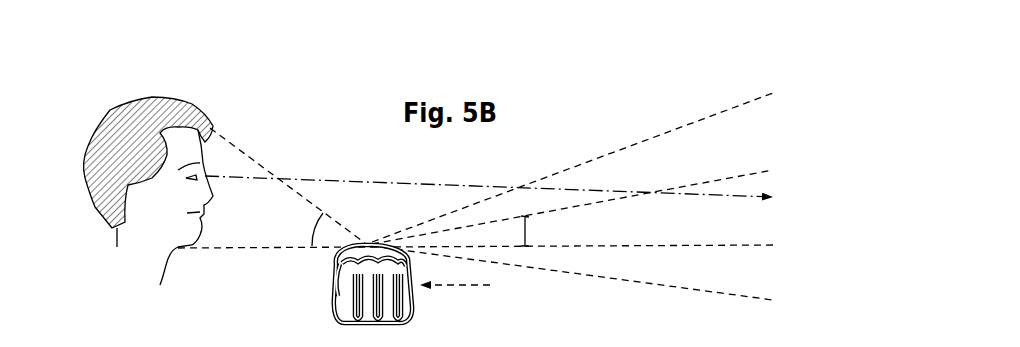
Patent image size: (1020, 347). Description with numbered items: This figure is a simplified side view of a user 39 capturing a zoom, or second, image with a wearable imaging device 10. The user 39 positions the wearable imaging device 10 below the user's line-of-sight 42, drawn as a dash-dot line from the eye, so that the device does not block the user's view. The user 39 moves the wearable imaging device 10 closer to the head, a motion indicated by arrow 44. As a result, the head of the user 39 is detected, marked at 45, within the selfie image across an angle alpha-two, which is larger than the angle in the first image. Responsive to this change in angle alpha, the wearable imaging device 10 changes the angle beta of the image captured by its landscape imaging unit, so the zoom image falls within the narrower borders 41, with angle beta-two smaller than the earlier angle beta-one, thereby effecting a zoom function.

The wearable imaging device 10 is at (368, 241).
The user 39 is at (218, 116).
The borders 41 is at (732, 183).
The line-of-sight 42 is at (313, 177).
The arrow 44 is at (462, 291).
The head detection 45 is at (288, 192).